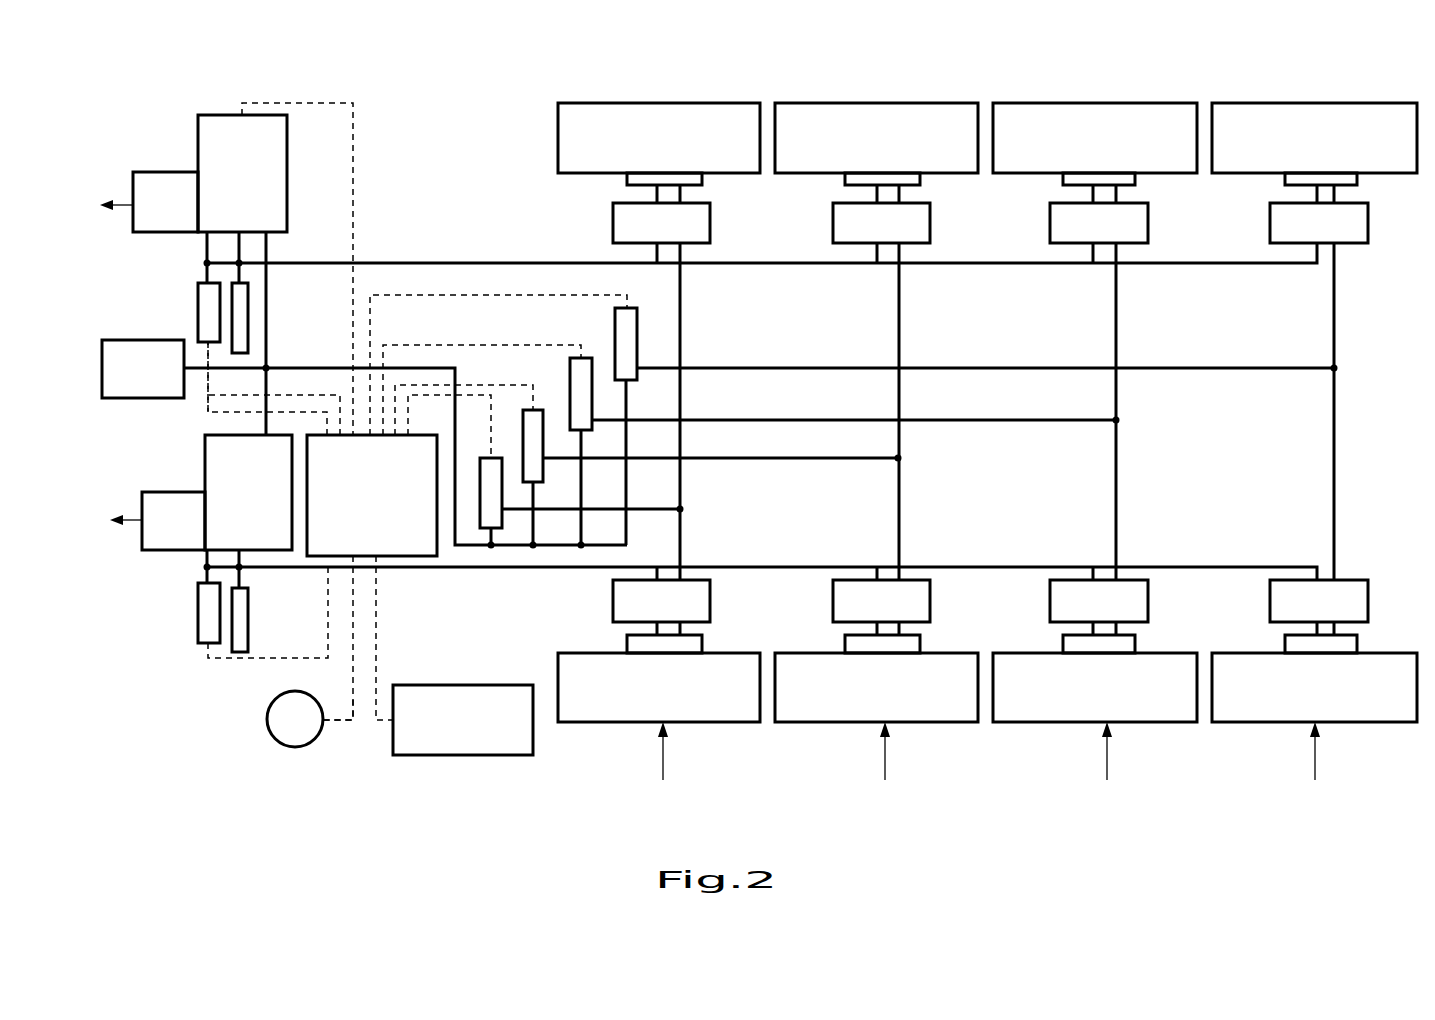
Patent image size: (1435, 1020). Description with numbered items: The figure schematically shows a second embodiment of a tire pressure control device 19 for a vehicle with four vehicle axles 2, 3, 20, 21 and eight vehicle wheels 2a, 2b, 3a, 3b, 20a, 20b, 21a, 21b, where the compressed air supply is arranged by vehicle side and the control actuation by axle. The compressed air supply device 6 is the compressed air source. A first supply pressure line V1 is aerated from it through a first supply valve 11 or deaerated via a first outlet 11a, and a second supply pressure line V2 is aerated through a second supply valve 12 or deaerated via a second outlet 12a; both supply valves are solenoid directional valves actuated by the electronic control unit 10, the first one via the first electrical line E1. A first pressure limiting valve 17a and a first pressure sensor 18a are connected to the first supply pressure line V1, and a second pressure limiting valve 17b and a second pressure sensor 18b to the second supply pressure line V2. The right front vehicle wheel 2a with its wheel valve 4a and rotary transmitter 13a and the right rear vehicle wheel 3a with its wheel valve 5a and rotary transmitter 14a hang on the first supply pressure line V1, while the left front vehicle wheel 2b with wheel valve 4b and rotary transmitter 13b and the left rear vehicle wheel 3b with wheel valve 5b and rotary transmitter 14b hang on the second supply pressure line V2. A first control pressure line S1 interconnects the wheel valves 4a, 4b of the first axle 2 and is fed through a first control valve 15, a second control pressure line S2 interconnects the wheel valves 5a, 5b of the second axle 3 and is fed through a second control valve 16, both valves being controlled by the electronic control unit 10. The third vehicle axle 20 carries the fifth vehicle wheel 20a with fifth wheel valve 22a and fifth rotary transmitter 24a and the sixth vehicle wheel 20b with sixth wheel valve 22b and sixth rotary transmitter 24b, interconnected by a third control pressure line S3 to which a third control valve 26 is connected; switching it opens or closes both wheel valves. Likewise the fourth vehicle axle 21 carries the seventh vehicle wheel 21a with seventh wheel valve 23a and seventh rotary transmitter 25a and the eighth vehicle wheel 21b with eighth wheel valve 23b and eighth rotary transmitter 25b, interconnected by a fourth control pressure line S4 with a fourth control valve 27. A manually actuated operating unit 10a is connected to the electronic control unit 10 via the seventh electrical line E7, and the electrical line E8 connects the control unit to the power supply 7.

The tire pressure control device 19 is at (503, 101).
The first supply valve 11 is at (226, 179).
The first outlet 11a is at (146, 215).
The compressed air supply device 6 is at (131, 382).
The second supply valve 12 is at (234, 499).
The second outlet 12a is at (151, 534).
The electronic control unit 10 is at (356, 505).
The operating unit 10a is at (435, 730).
The power supply 7 is at (288, 731).
The first electrical line E1 is at (353, 148).
The seventh electrical line E7 is at (376, 642).
The electrical line E8 is at (340, 722).
The first pressure sensor 18a is at (198, 306).
The first pressure limiting valve 17a is at (248, 330).
The second pressure sensor 18b is at (198, 612).
The second pressure limiting valve 17b is at (248, 618).
The first supply pressure line V1 is at (481, 263).
The second supply pressure line V2 is at (488, 567).
The first control valve 15 is at (480, 466).
The second control valve 16 is at (523, 432).
The third control valve 26 is at (570, 378).
The fourth control valve 27 is at (615, 328).
The right front vehicle wheel 2a is at (654, 153).
The wheel valve 4a is at (627, 178).
The rotary transmitter 13a is at (641, 235).
The first control pressure line S1 is at (683, 322).
The rotary transmitter 13b is at (641, 615).
The wheel valve 4b is at (702, 645).
The left front vehicle wheel 2b is at (634, 699).
The vehicle axle 2 is at (663, 765).
The right rear vehicle wheel 3a is at (866, 153).
The wheel valve 5a is at (845, 178).
The rotary transmitter 14a is at (862, 235).
The second control pressure line S2 is at (902, 322).
The rotary transmitter 14b is at (862, 615).
The wheel valve 5b is at (920, 645).
The left rear vehicle wheel 3b is at (854, 699).
The vehicle axle 3 is at (885, 765).
The fifth vehicle wheel 20a is at (1075, 153).
The fifth wheel valve 22a is at (1063, 178).
The fifth rotary transmitter 24a is at (1078, 235).
The third control pressure line S3 is at (1119, 322).
The sixth rotary transmitter 24b is at (1078, 615).
The sixth wheel valve 22b is at (1135, 645).
The sixth vehicle wheel 20b is at (1076, 699).
The third vehicle axle 20 is at (1106, 765).
The seventh vehicle wheel 21a is at (1293, 153).
The seventh wheel valve 23a is at (1285, 178).
The seventh rotary transmitter 25a is at (1300, 235).
The fourth control pressure line S4 is at (1337, 322).
The eighth rotary transmitter 25b is at (1300, 615).
The eighth wheel valve 23b is at (1357, 645).
The eighth vehicle wheel 21b is at (1293, 699).
The fourth vehicle axle 21 is at (1314, 765).